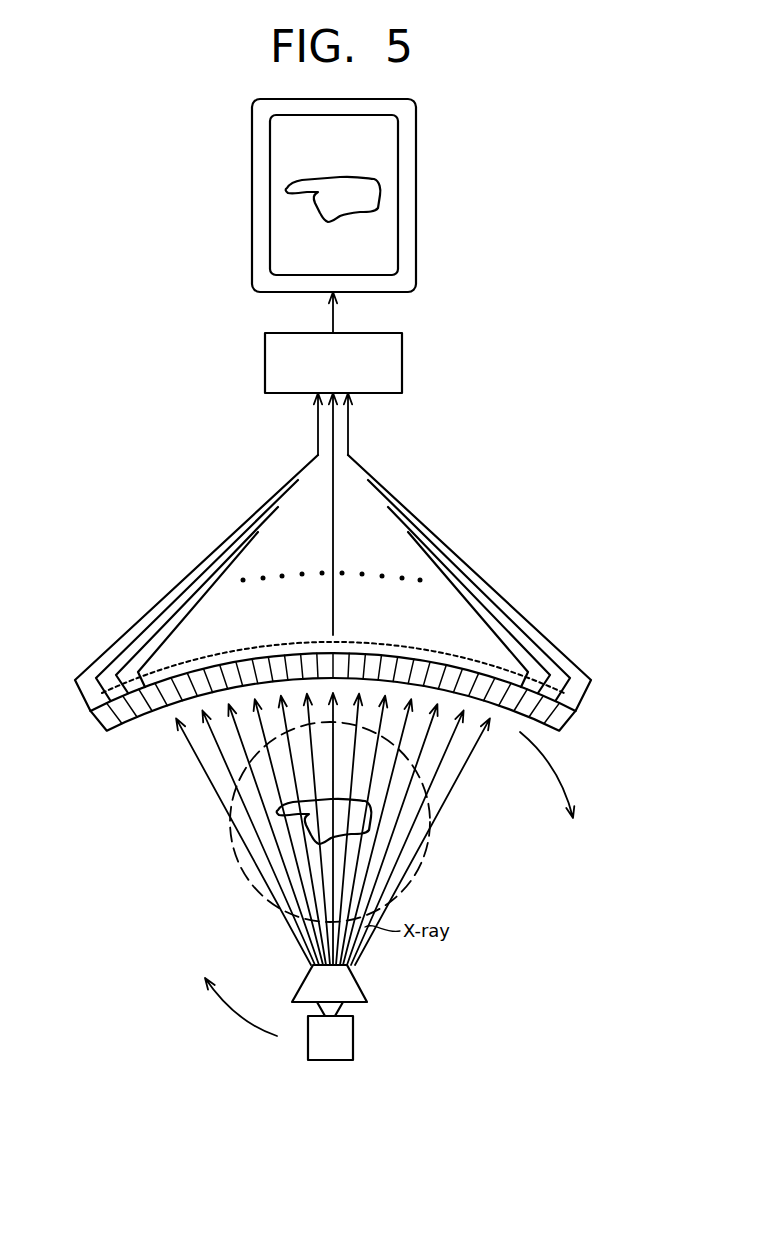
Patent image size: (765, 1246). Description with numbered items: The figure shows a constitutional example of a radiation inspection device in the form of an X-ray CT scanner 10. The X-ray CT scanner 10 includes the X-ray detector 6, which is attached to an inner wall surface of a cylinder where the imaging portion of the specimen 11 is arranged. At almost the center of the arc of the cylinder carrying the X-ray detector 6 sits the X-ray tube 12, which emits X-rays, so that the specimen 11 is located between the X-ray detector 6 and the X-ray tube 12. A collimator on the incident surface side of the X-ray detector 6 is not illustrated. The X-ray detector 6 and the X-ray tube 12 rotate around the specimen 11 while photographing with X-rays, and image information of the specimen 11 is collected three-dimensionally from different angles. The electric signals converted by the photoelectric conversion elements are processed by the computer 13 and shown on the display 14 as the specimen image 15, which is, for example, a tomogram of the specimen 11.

The X-ray detector 6 is at (78, 731).
The X-ray CT scanner 10 is at (545, 466).
The specimen 11 is at (363, 813).
The X-ray tube 12 is at (353, 1040).
The computer 13 is at (402, 365).
The display 14 is at (398, 146).
The specimen image 15 is at (370, 195).